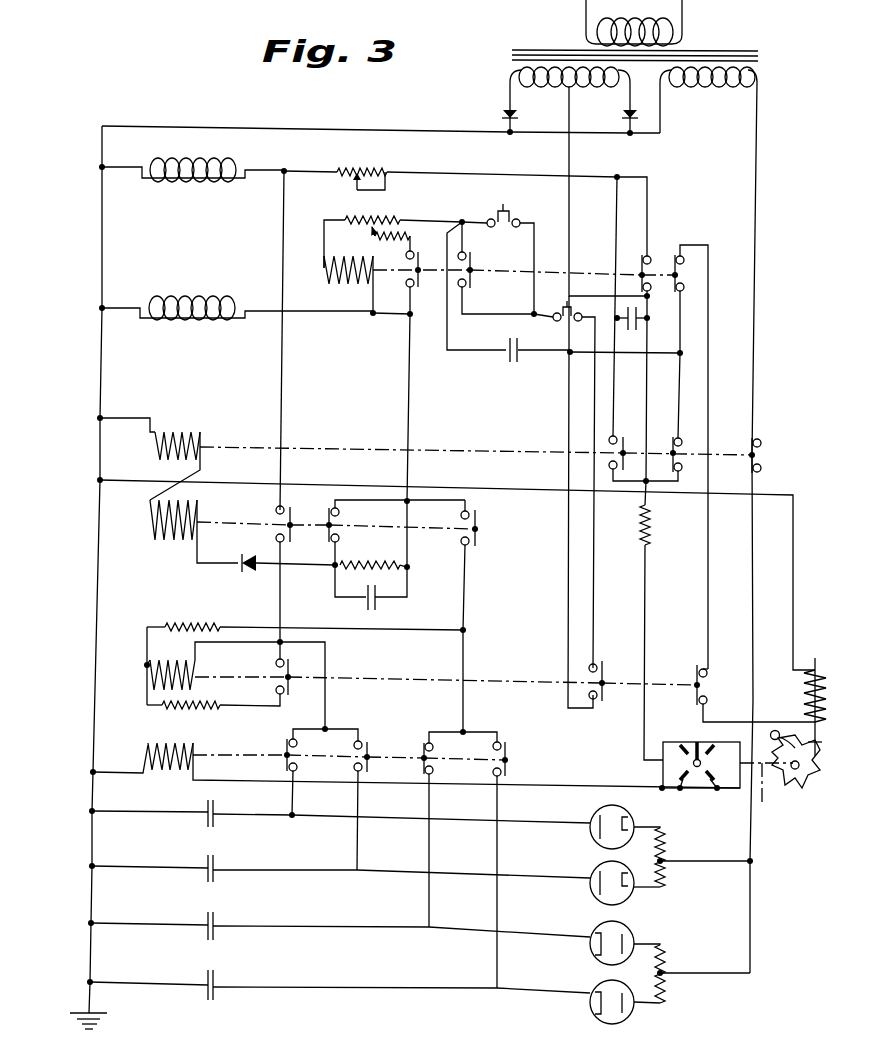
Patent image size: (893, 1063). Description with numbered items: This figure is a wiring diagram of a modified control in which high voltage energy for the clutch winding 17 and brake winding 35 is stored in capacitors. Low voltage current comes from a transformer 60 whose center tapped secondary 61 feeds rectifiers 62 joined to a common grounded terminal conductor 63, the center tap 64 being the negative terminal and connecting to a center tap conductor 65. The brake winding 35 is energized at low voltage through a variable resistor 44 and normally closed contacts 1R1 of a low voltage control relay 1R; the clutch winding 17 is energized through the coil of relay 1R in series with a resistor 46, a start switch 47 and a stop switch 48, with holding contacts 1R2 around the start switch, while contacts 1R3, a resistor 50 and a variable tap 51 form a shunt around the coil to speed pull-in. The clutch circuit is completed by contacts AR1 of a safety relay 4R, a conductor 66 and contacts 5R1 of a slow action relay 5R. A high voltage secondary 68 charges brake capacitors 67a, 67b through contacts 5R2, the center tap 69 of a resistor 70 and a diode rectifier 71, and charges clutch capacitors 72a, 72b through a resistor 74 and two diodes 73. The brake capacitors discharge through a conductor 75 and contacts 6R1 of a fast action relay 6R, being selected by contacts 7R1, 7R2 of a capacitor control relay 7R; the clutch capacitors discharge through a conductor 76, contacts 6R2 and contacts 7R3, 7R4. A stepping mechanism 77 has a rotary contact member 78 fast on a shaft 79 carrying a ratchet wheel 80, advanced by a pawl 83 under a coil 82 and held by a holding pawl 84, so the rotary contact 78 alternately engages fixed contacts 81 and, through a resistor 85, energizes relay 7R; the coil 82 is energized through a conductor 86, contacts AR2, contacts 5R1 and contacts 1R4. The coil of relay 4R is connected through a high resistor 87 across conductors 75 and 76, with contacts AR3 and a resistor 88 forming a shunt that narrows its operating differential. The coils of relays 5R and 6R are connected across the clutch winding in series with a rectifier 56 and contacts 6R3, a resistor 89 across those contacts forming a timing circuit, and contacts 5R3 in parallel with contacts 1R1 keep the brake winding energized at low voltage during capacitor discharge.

The transformer 60 is at (706, 52).
The center tapped secondary 61 is at (547, 88).
The rectifiers 62 is at (500, 111).
The common grounded terminal conductor 63 is at (300, 127).
The center tap 64 is at (572, 92).
The center tap conductor 65 is at (570, 155).
The conductor 66 is at (568, 583).
The high voltage secondary 68 is at (727, 88).
The brake winding 35 is at (218, 183).
The clutch winding 17 is at (205, 321).
The variable resistor 44 is at (370, 168).
The resistor 46 is at (385, 218).
The start switch 47 is at (523, 219).
The stop switch 48 is at (564, 326).
The resistor 50 is at (413, 232).
The variable tap 51 is at (368, 236).
The low voltage control relay 1R is at (348, 284).
The normally closed contacts 1R1 is at (655, 259).
The normally open contacts 1R2 is at (474, 263).
The normally open contacts 1R3 is at (424, 280).
The normally closed contacts 1R4 is at (687, 266).
The slow action high voltage control relay 5R is at (190, 434).
The normally closed contacts 5R1 is at (687, 447).
The normally closed contacts 5R2 is at (763, 457).
The normally open contacts 5R3 is at (620, 473).
The fast action high voltage control relay 6R is at (170, 540).
The normally open contacts 6R1 is at (275, 521).
The normally open contacts 6R2 is at (481, 519).
The normally closed contacts 6R3 is at (339, 526).
The rectifier 56 is at (238, 573).
The resistor 85 is at (650, 530).
The conductor 86 is at (793, 605).
The resistor 87 is at (208, 626).
The resistor 88 is at (166, 707).
The resistor 89 is at (372, 462).
The safety relay 4R is at (172, 665).
The normally open contacts of safety relay AR1 is at (606, 661).
The normally closed contacts of safety relay AR2 is at (708, 679).
The normally open contacts of safety relay AR3 is at (272, 670).
The conductor 75 is at (327, 660).
The conductor 76 is at (465, 655).
The capacitor control relay 7R is at (184, 748).
The normally closed contacts 7R1 is at (284, 752).
The normally open contacts 7R2 is at (370, 742).
The normally open contacts 7R3 is at (508, 756).
The normally closed contacts 7R4 is at (420, 755).
The brake capacitor 67a is at (215, 822).
The brake capacitor 67b is at (215, 878).
The clutch capacitor 72a is at (215, 936).
The clutch capacitor 72b is at (215, 995).
The diode rectifier 71 is at (591, 838).
The diodes 73 is at (592, 956).
The resistor 70 is at (667, 838).
The center tap 69 is at (666, 864).
The resistor 74 is at (667, 996).
The stepping mechanism 77 is at (690, 740).
The rotary contact member 78 is at (688, 745).
The fixed contacts 81 is at (649, 776).
The stepping coil 82 is at (822, 692).
The actuating pawl 83 is at (824, 742).
The holding pawl 84 is at (779, 731).
The ratchet wheel 80 is at (808, 778).
The shaft 79 is at (770, 793).